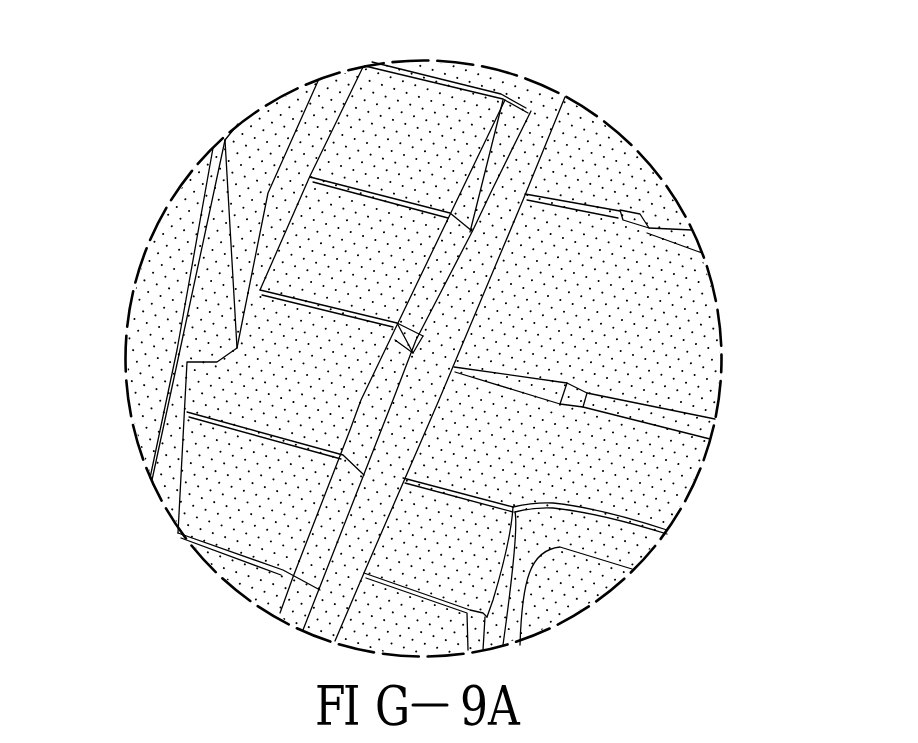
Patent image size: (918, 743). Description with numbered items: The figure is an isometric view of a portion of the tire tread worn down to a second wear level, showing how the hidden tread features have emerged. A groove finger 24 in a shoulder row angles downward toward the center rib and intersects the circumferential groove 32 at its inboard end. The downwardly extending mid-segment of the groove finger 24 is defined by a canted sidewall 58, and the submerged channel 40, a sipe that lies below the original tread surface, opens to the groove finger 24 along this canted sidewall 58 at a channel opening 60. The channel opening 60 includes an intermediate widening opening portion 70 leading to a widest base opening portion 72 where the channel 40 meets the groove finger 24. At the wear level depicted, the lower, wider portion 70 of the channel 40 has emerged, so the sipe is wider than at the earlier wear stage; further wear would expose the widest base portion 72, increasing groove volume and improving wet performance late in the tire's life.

The groove finger 24 is at (492, 228).
The circumferential groove 32 is at (218, 313).
The channel 40 is at (295, 297).
The canted sidewall 58 is at (497, 152).
The channel opening 60 is at (412, 333).
The intermediate widening opening portion 70 is at (400, 345).
The widest base opening portion 72 is at (412, 342).